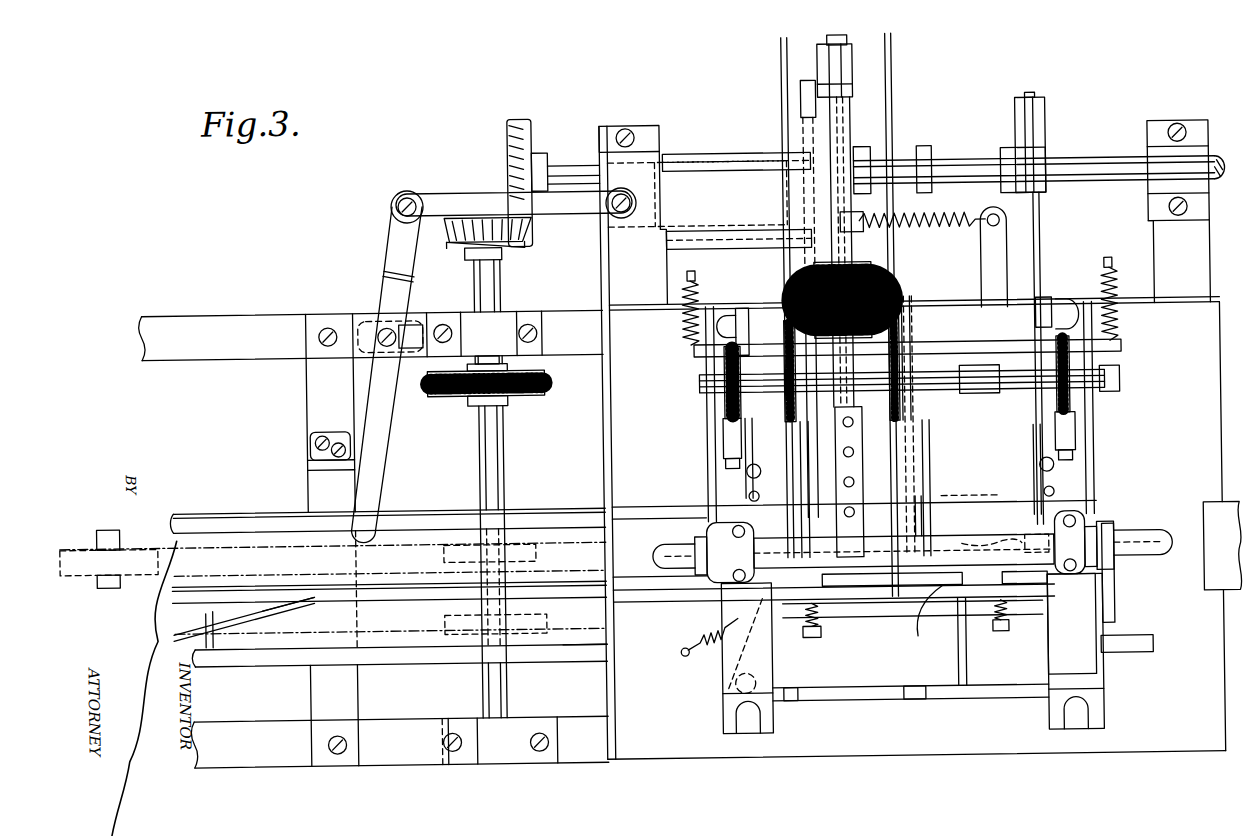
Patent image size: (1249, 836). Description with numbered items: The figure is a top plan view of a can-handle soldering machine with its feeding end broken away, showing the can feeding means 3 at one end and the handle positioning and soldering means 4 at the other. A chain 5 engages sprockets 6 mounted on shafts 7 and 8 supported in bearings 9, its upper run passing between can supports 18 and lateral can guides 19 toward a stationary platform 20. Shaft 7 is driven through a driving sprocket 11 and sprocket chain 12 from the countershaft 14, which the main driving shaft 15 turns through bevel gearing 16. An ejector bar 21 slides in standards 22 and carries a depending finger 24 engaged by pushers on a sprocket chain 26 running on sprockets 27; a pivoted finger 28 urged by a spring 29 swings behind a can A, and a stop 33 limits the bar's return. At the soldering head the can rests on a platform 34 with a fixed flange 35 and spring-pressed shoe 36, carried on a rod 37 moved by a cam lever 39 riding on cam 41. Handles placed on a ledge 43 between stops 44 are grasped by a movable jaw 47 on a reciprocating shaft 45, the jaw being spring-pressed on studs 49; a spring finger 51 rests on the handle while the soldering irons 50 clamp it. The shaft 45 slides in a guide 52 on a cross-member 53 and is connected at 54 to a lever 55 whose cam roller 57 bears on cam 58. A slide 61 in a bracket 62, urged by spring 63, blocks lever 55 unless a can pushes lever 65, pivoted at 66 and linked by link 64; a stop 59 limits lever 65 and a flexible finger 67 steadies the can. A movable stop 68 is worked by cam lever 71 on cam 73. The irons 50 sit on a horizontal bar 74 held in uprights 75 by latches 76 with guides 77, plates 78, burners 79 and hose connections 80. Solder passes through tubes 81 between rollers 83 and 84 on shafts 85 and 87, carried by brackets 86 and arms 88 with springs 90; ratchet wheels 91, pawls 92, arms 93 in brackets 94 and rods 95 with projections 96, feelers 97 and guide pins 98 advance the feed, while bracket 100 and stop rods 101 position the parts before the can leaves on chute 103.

The can feeding means 3 is at (374, 539).
The handle positioning and soldering means 4 is at (912, 439).
The chain 5 is at (268, 542).
The sprockets 6 is at (140, 543).
The shaft 7 is at (307, 306).
The shaft 8 is at (100, 527).
The bearings 9 is at (520, 312).
The driving sprocket 11 is at (458, 400).
The sprocket chain 12 is at (545, 385).
The countershaft 14 is at (502, 276).
The main driving shaft 15 is at (1088, 164).
The bevel gearing 16 is at (530, 232).
The can supports 18 is at (202, 580).
The can guides 19 is at (415, 508).
The stationary platform 20 is at (648, 507).
The ejector bar 21 is at (578, 661).
The standards 22 is at (722, 690).
The depending finger 24 is at (212, 626).
The sprocket chain 26 is at (395, 662).
The sprockets 27 is at (545, 622).
The pivoted finger 28 is at (750, 650).
The spring 29 is at (695, 641).
The stop 33 is at (1120, 645).
The platform 34 is at (1112, 594).
The fixed flange 35 is at (975, 500).
The spring-pressed shoe 36 is at (905, 608).
The reciprocating bar or rod 37 is at (1020, 548).
The cam lever 39 is at (925, 422).
The cam 41 is at (870, 233).
The ledge 43 is at (935, 703).
The stops 44 is at (781, 697).
The reciprocating shaft 45 is at (849, 145).
The movable jaw 47 is at (836, 460).
The studs 49 is at (855, 427).
The soldering irons 50 is at (826, 590).
The spring finger 51 is at (860, 590).
The guide 52 is at (866, 268).
The cross-member 53 is at (938, 308).
The connection 54 is at (850, 82).
The lever 55 is at (852, 45).
The cam roller 57 is at (788, 306).
The cam 58 is at (805, 104).
The stop 59 is at (312, 442).
The slide 61 is at (702, 163).
The bracket 62 is at (668, 278).
The spring 63 is at (958, 214).
The link 64 is at (482, 190).
The lever 65 is at (385, 284).
The pivot 66 is at (388, 346).
The flexible finger 67 is at (278, 606).
The movable stop 68 is at (1002, 536).
The cam lever 71 is at (1044, 266).
The cam 73 is at (1050, 118).
The horizontal bar 74 is at (904, 551).
The uprights 75 is at (700, 591).
The latches 76 is at (712, 545).
The guides 77 is at (662, 578).
The plates 78 is at (952, 640).
The burners 79 is at (692, 550).
The hose connections 80 is at (655, 556).
The tubes 81 is at (790, 470).
The feeding rollers 83 is at (800, 370).
The feeding rollers 84 is at (786, 335).
The shaft 85 is at (1003, 396).
The brackets 86 is at (722, 405).
The shaft 87 is at (998, 346).
The arms 88 is at (698, 278).
The springs 90 is at (683, 320).
The ratchet wheels 91 is at (724, 430).
The pawls 92 is at (742, 470).
The arms 93 is at (725, 455).
The brackets 94 is at (740, 312).
The rods 95 is at (752, 440).
The projections 96 is at (761, 474).
The feelers 97 is at (1024, 516).
The guide pins 98 is at (747, 500).
The bracket 100 is at (923, 438).
The stop rods 101 is at (922, 510).
The slide or chute 103 is at (1206, 510).
The can A is at (1071, 623).